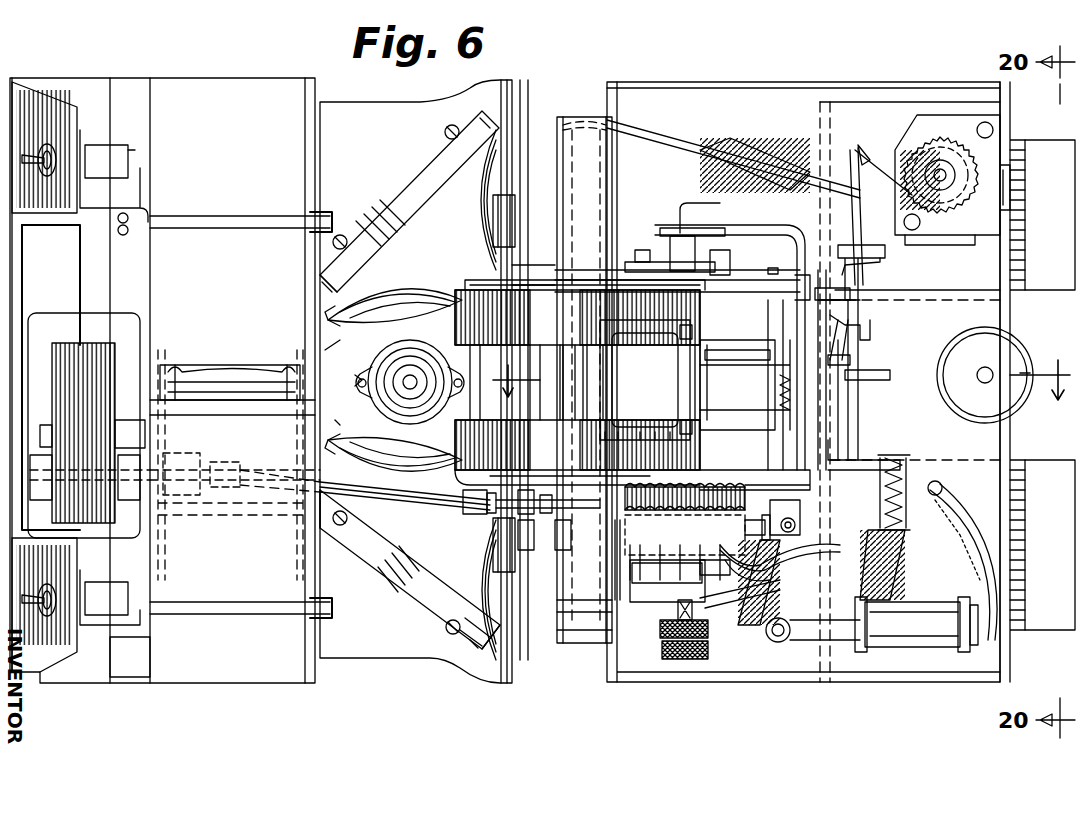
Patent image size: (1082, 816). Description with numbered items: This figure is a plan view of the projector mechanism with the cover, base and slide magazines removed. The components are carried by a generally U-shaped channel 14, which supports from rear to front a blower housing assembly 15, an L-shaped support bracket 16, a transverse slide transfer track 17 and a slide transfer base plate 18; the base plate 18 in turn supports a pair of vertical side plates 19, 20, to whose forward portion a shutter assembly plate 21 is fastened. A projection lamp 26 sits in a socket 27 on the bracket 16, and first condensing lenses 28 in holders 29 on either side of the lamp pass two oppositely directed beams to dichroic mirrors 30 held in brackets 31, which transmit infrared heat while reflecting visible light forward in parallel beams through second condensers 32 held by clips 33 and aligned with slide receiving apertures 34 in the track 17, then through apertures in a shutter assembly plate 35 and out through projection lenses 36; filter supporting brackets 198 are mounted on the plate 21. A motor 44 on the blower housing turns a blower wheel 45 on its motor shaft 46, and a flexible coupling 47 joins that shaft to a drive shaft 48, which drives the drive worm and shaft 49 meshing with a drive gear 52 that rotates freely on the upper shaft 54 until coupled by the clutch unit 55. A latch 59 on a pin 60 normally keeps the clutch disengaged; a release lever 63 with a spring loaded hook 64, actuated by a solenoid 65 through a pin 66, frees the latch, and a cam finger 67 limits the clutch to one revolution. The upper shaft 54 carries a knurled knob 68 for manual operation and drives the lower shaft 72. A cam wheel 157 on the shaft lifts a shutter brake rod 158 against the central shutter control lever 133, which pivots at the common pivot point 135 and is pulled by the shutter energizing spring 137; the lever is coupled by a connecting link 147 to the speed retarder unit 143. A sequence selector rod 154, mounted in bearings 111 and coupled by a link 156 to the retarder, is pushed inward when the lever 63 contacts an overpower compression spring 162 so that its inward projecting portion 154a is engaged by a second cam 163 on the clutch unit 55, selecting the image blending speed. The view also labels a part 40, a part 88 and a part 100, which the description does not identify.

The U-shaped channel 14 is at (540, 265).
The blower housing assembly 15 is at (213, 684).
The L-shaped support bracket 16 is at (355, 660).
The slide transfer track 17 is at (560, 650).
The slide transfer base plate 18 is at (735, 680).
The vertical side plate 19 is at (465, 470).
The vertical side plate 20 is at (470, 285).
The shutter assembly plate 21 is at (985, 665).
The projection lamp 26 is at (417, 374).
The socket 27 is at (358, 392).
The first condensing lens 28 is at (406, 318).
The holder 29 is at (360, 428).
The dichroic mirror 30 is at (380, 558).
The bracket 31 is at (385, 597).
The second condenser 32 is at (478, 548).
The clip 33 is at (500, 555).
The slide receiving aperture 34 is at (552, 590).
The shutter assembly plate 35 is at (810, 200).
The projection lens 36 is at (1040, 458).
The dial 40 is at (988, 330).
The motor 44 is at (70, 300).
The blower wheel 45 is at (236, 350).
The motor shaft 46 is at (180, 500).
The flexible coupling 47 is at (218, 490).
The drive shaft 48 is at (370, 498).
The drive worm and shaft 49 is at (590, 510).
The drive gear 52 is at (630, 515).
The upper shaft 54 is at (672, 365).
The clutch unit 55 is at (635, 540).
The latch 59 is at (770, 545).
The pin 60 is at (786, 525).
The release lever 63 is at (770, 640).
The spring loaded hook 64 is at (735, 605).
The solenoid 65 is at (878, 652).
The pin 66 is at (777, 642).
The cam finger 67 is at (658, 582).
The knurled knob 68 is at (675, 660).
The lower shaft 72 is at (707, 392).
The contact 88 is at (775, 268).
The armature 100 is at (596, 390).
The bearings 111 is at (880, 300).
The central shutter control lever 133 is at (870, 330).
The common pivot point 135 is at (903, 385).
The shutter energizing spring 137 is at (780, 375).
The speed retarder unit 143 is at (925, 118).
The connecting link 147 is at (866, 212).
The sequence selector rod 154 is at (862, 572).
The inward projecting portion 154a is at (660, 612).
The link 156 is at (895, 265).
The cam wheel 157 is at (650, 232).
The shutter brake rod 158 is at (722, 215).
The overpower compression spring 162 is at (875, 515).
The second cam 163 is at (718, 560).
The filter supporting bracket 198 is at (808, 133).